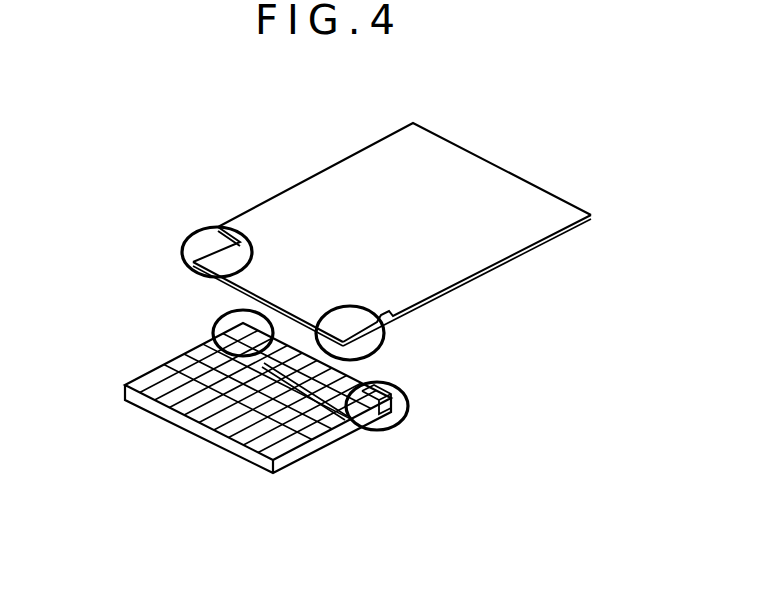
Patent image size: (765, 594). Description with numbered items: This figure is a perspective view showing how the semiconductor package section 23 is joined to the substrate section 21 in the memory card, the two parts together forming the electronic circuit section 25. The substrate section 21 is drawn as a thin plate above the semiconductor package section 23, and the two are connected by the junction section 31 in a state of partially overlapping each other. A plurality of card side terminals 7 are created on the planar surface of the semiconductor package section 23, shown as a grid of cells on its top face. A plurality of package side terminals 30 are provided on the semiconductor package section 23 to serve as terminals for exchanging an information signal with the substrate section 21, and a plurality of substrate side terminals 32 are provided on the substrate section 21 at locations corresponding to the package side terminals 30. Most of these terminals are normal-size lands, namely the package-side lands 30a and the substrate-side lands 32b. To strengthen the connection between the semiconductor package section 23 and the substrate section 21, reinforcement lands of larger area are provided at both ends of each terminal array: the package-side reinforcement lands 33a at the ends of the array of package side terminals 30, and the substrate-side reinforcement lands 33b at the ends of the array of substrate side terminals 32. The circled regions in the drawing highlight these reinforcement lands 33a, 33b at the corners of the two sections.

The electronic circuit section 25 is at (159, 117).
The substrate section 21 is at (297, 165).
The semiconductor package section 23 is at (158, 348).
The card side terminal 7 is at (153, 393).
The package side terminal 30 is at (536, 390).
The package-side land 30a is at (407, 402).
The junction section 31 is at (590, 312).
The substrate side terminal 32 is at (536, 283).
The substrate-side land 32b is at (288, 318).
The package-side reinforcement land 33a is at (397, 424).
The substrate-side reinforcement land 33b is at (198, 228).